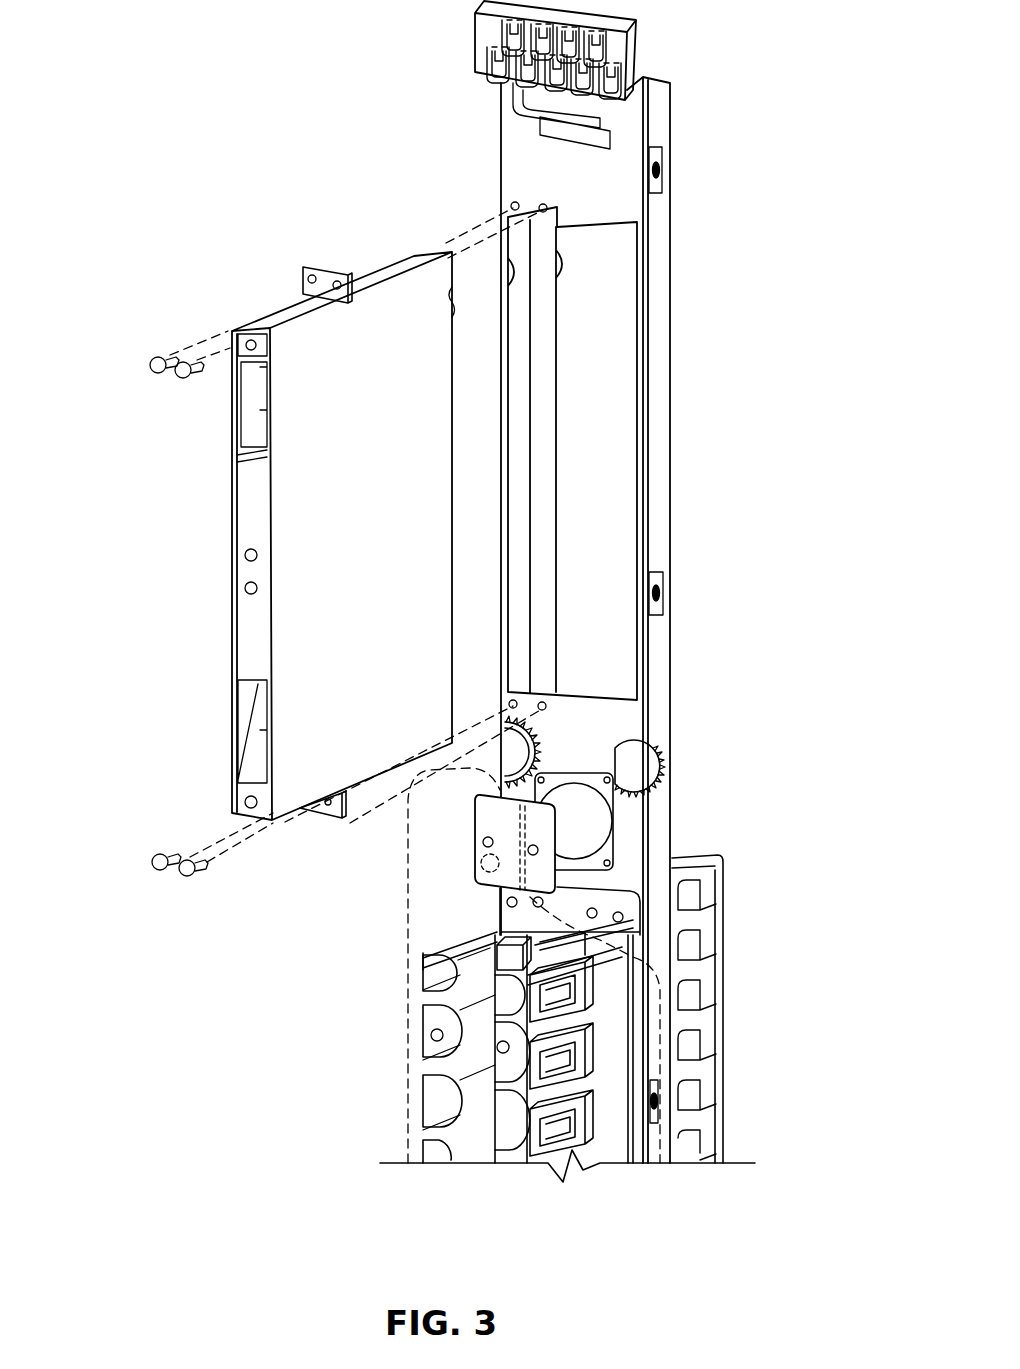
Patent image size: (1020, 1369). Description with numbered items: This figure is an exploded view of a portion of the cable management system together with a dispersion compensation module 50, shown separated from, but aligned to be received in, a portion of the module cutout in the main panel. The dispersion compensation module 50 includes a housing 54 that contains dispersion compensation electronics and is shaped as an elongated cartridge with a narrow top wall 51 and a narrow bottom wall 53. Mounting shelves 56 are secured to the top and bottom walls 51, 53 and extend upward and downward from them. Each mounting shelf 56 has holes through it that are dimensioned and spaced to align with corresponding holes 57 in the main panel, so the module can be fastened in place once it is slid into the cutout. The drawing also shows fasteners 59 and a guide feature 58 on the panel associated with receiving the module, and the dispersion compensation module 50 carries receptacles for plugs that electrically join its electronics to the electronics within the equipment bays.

The dispersion compensation module 50 is at (314, 545).
The top wall 51 is at (285, 318).
The bottom wall 53 is at (287, 810).
The housing 54 is at (247, 522).
The mounting shelves 56 is at (322, 268).
The holes 57 is at (509, 203).
The guide slot 58 is at (506, 238).
The screws 59 is at (158, 356).